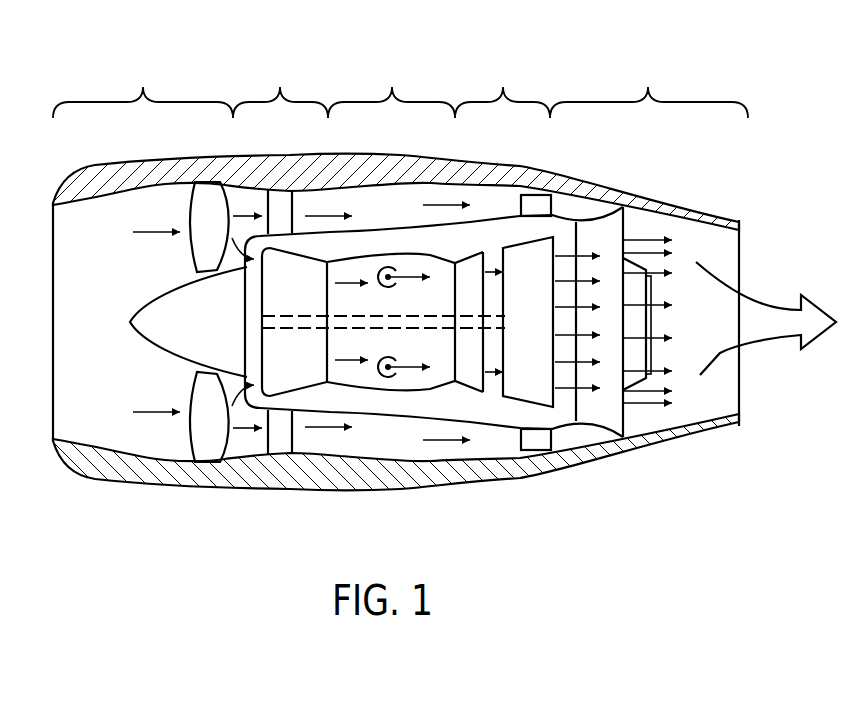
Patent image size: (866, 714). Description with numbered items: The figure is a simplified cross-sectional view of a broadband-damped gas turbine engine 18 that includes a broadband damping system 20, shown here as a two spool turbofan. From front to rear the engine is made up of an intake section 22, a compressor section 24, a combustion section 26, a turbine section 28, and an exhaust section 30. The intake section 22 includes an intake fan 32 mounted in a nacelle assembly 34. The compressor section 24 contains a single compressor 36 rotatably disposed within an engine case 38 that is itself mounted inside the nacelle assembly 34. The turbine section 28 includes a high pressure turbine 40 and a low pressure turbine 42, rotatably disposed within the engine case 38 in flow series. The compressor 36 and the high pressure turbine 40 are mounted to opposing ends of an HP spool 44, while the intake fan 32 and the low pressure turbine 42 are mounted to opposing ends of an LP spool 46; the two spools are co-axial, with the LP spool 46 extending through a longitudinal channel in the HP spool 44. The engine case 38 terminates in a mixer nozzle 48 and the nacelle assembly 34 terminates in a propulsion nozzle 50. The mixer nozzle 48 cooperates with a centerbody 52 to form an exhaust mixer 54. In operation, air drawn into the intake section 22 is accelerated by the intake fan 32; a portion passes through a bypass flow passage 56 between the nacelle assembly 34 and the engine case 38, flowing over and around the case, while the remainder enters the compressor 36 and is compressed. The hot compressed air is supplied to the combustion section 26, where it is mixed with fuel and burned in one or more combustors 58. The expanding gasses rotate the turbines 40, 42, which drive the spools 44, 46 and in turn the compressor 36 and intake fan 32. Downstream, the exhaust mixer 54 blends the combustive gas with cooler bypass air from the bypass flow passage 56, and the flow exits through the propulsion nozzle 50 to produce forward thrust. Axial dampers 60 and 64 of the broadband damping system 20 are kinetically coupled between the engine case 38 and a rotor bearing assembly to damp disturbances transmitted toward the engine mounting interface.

The gas turbine engine 18 is at (748, 66).
The broadband damping system 20 is at (523, 445).
The intake section 22 is at (143, 86).
The compressor section 24 is at (280, 86).
The combustion section 26 is at (391, 86).
The turbine section 28 is at (502, 86).
The exhaust section 30 is at (649, 86).
The intake fan 32 is at (222, 337).
The nacelle assembly 34 is at (200, 488).
The compressor 36 is at (310, 303).
The engine case 38 is at (393, 405).
The high pressure turbine 40 is at (472, 263).
The low pressure turbine 42 is at (548, 340).
The HP shaft or spool 44 is at (373, 330).
The LP shaft or spool 46 is at (248, 323).
The mixer nozzle 48 is at (600, 418).
The propulsion nozzle 50 is at (741, 248).
The centerbody 52 is at (633, 288).
The exhaust mixer 54 is at (640, 358).
The bypass flow passage 56 is at (397, 197).
The combustor 58 is at (383, 263).
The three parameter axial damper 60 is at (538, 193).
The three parameter axial damper 64 is at (537, 452).